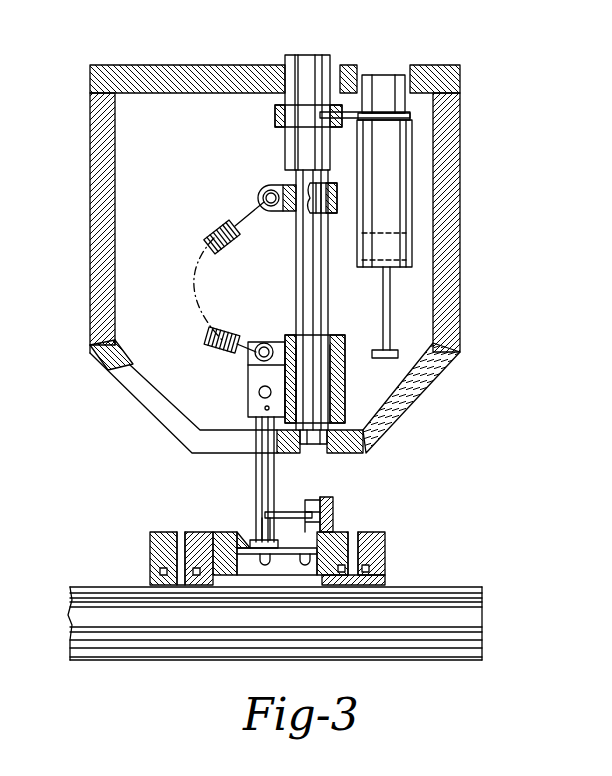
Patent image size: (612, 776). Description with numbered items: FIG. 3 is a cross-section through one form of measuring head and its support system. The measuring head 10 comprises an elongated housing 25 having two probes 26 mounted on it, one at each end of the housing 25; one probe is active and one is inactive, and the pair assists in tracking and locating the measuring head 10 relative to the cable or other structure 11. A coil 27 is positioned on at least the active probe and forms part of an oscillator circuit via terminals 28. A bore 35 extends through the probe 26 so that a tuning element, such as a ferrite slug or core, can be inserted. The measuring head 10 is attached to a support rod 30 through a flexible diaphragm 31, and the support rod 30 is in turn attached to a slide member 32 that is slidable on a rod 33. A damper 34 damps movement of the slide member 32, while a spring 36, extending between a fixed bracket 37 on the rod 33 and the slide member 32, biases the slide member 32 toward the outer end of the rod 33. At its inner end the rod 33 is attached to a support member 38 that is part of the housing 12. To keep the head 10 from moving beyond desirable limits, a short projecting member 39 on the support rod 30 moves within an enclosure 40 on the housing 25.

The measuring head 10 is at (379, 510).
The cable or other structure 11 is at (70, 590).
The housing 12 is at (90, 215).
The elongated housing 25 is at (386, 546).
The probes 26 is at (150, 572).
The coil 27 is at (150, 568).
The terminals 28 is at (222, 530).
The support rod 30 is at (256, 468).
The flexible diaphragm 31 is at (252, 556).
The slide member 32 is at (346, 378).
The rod 33 is at (296, 280).
The damper 34 is at (412, 210).
The bore 35 is at (181, 535).
The spring 36 is at (205, 233).
The fixed bracket 37 is at (288, 214).
The support member 38 is at (285, 150).
The projecting member 39 is at (283, 512).
The enclosure 40 is at (344, 501).